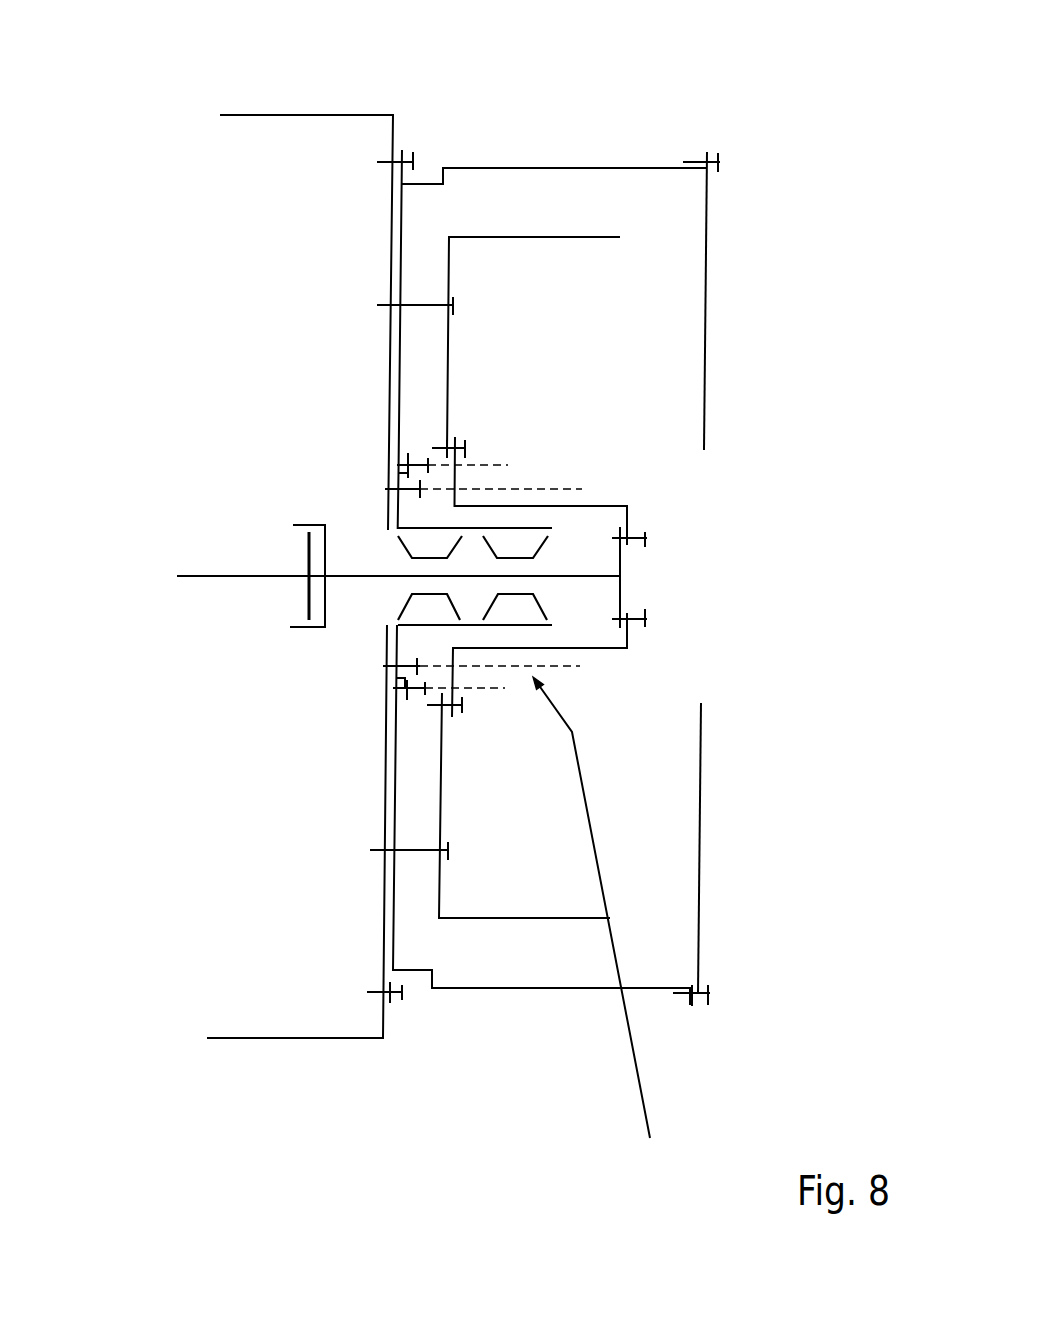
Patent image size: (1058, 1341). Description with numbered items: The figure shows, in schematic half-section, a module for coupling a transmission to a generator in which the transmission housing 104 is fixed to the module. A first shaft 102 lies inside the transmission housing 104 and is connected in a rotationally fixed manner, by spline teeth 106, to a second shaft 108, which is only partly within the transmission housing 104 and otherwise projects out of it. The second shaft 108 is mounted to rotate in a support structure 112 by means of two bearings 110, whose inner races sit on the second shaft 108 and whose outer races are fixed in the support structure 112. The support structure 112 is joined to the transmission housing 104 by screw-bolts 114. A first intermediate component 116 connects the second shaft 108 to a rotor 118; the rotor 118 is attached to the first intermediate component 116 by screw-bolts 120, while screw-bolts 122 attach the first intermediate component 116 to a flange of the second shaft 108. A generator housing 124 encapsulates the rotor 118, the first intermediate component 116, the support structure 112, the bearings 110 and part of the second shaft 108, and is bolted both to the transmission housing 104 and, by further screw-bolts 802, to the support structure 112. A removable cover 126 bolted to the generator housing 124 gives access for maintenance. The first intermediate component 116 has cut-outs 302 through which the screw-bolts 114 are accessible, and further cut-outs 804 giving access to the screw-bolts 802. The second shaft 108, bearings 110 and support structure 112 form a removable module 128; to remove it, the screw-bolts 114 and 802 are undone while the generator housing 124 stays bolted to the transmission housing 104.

The first shaft 102 is at (247, 577).
The transmission housing 104 is at (297, 115).
The spline teeth 106 is at (305, 627).
The second shaft 108 is at (369, 578).
The bearings 110 is at (562, 505).
The support structure 112 is at (537, 625).
The screw-bolts 114 is at (455, 668).
The first intermediate component 116 is at (517, 545).
The rotor 118 is at (502, 237).
The screw-bolts 120 is at (467, 445).
The screw-bolts 122 is at (647, 533).
The generator housing 124 is at (478, 167).
The removable cover 126 is at (700, 855).
The module 128 is at (604, 930).
The cut-outs 302 is at (457, 667).
The screw-bolts 802 is at (425, 690).
The cut-outs 804 is at (420, 671).